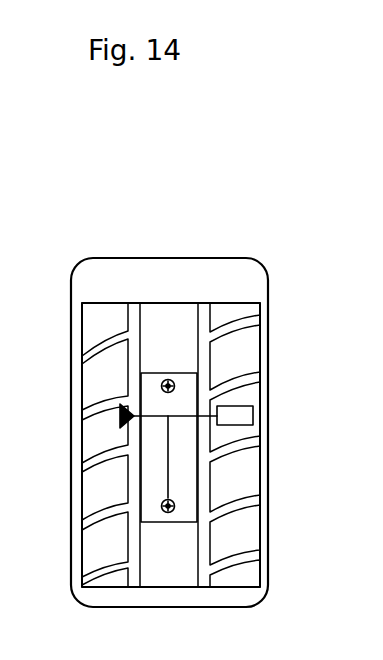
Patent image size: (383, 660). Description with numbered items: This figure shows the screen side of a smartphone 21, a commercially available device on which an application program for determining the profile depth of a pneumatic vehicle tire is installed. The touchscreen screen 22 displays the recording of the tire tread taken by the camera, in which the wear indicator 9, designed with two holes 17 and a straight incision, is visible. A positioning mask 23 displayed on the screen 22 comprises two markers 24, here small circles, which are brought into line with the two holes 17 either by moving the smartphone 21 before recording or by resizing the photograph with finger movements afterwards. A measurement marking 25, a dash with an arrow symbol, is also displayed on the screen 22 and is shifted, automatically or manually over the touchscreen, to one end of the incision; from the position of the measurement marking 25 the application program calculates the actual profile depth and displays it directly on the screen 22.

The wear indicator 9 is at (170, 455).
The holes 17 is at (174, 383).
The smartphone 21 is at (185, 255).
The screen 22 is at (120, 303).
The positioning mask 23 is at (138, 402).
The markers 24 is at (167, 373).
The measurement marking 25 is at (120, 408).